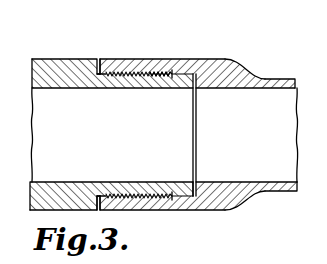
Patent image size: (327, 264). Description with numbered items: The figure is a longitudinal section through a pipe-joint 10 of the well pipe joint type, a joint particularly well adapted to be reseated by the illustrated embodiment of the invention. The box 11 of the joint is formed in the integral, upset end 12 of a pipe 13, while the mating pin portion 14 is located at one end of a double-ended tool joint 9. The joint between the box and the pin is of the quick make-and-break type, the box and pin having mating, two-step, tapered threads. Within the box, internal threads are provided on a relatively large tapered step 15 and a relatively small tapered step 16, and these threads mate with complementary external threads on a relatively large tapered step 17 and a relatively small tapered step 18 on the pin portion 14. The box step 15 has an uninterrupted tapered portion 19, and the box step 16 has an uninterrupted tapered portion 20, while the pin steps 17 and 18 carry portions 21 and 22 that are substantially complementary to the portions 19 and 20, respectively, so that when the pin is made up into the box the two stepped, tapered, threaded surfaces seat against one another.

The double-ended tool joint 9 is at (45, 59).
The pipe-joint 10 is at (97, 70).
The box 11 is at (210, 60).
The upset end 12 is at (223, 70).
The pipe 13 is at (283, 79).
The pin portion 14 is at (123, 78).
The relatively large tapered step of box 15 is at (104, 73).
The relatively small tapered step of box 16 is at (164, 78).
The relatively large tapered step of pin 17 is at (116, 67).
The relatively small tapered step of pin 18 is at (170, 68).
The uninterrupted tapered portion of box step 15 19 is at (93, 196).
The uninterrupted tapered portion of box step 16 20 is at (188, 192).
The complementary portion of pin step 17 21 is at (121, 62).
The complementary portion of pin step 18 22 is at (165, 63).